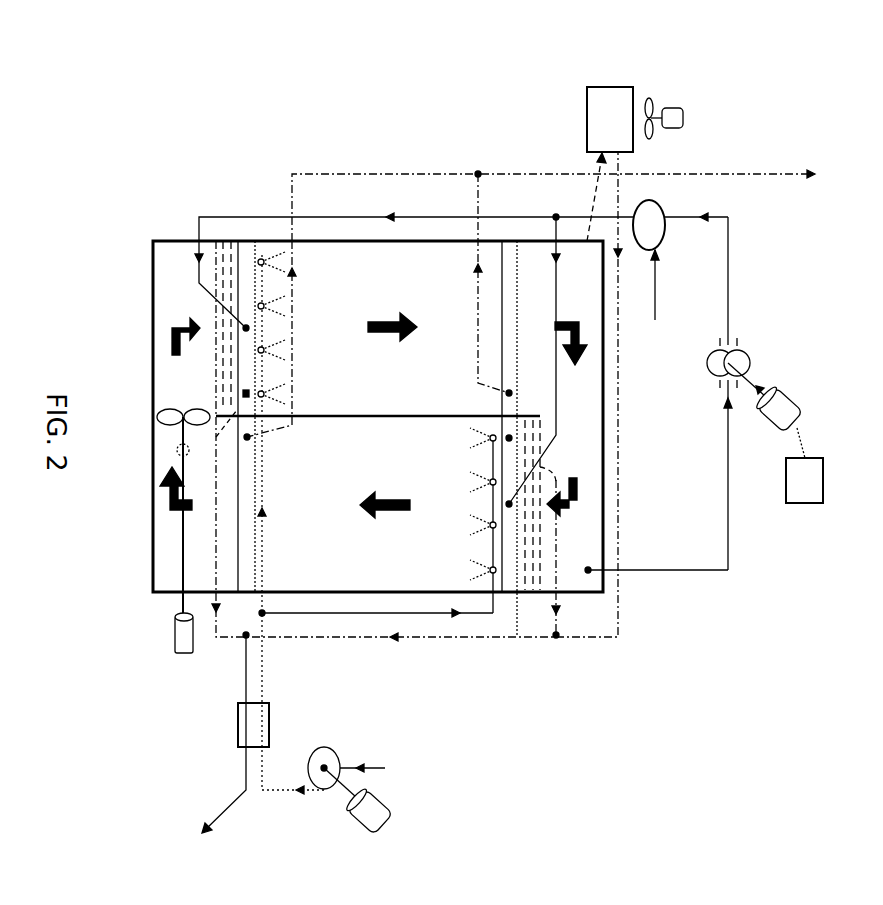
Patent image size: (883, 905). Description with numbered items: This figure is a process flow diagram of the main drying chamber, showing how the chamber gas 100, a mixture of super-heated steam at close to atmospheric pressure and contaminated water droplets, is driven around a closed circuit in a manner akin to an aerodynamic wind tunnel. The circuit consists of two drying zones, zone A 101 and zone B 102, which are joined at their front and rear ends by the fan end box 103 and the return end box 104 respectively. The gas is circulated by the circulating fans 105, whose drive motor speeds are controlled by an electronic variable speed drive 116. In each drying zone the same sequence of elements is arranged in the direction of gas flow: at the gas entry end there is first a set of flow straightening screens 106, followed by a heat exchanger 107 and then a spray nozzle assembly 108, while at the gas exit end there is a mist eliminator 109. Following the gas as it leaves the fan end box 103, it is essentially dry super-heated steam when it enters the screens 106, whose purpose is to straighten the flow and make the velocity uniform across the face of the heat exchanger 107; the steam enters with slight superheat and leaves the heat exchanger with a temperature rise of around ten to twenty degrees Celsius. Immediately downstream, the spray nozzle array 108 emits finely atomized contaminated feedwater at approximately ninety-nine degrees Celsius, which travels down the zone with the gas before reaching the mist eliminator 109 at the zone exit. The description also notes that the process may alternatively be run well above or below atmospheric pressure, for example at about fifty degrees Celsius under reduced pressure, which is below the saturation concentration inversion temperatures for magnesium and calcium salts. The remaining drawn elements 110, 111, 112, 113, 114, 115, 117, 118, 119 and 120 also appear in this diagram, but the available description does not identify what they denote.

The chamber gas 100 is at (375, 318).
The drying zone A 101 is at (397, 513).
The drying zone B 102 is at (436, 268).
The fan end box 103 is at (158, 257).
The return end box 104 is at (583, 528).
The circulating fans 105 is at (165, 408).
The flow straightening screens 106 is at (224, 255).
The heat exchanger HX3 107 is at (244, 258).
The spray nozzle assembly 108 is at (270, 255).
The mist eliminator 109 is at (510, 243).
The fan 110 is at (745, 350).
The fan motor 111 is at (793, 388).
The makeup water inlet 112 is at (377, 768).
The pump 113 is at (324, 747).
The heat exchanger HX2 114 is at (269, 726).
The exhaust line 115 is at (403, 174).
The electronic variable speed drive 116 is at (175, 633).
The return line 117 is at (702, 575).
The valve 118 is at (651, 278).
The bypass line 119 is at (618, 490).
The heat exchanger HX4 120 is at (633, 87).